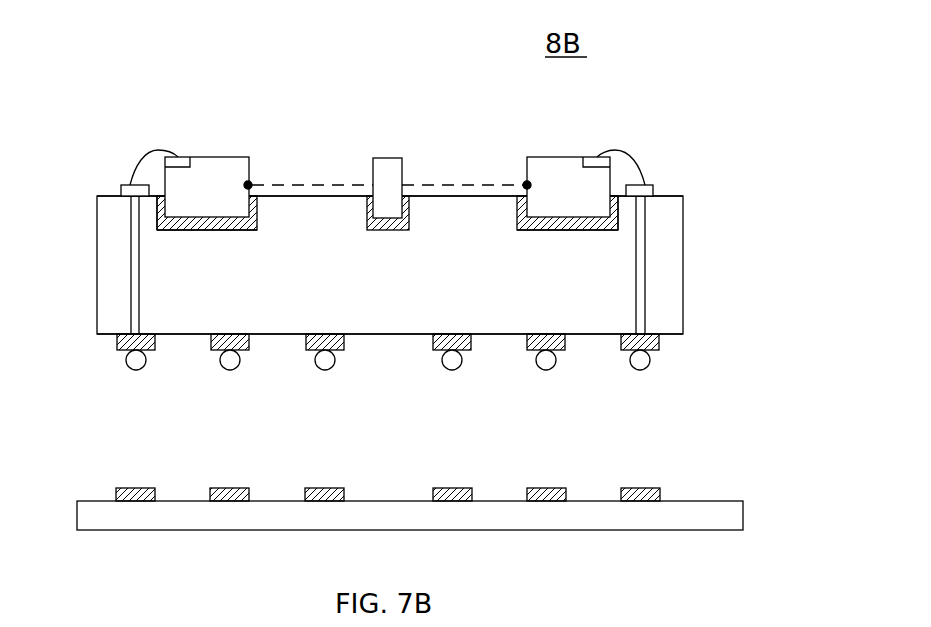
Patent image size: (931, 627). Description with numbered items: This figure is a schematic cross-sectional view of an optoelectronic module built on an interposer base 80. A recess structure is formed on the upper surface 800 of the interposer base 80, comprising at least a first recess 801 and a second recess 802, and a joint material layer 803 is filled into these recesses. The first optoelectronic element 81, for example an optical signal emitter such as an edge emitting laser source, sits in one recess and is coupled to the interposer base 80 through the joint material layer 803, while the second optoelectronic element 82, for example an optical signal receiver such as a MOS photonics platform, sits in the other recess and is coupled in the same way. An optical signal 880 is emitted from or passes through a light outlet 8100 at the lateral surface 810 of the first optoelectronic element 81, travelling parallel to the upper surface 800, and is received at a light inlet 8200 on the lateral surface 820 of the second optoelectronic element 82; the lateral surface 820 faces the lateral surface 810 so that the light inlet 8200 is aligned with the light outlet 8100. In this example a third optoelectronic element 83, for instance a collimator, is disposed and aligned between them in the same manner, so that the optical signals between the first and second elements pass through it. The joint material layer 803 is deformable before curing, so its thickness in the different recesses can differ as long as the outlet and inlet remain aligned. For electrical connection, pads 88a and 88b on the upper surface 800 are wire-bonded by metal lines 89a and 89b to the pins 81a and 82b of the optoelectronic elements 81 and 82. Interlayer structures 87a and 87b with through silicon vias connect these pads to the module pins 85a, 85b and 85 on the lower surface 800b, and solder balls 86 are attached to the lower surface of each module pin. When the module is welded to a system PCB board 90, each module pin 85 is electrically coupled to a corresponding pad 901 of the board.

The interposer base 80 is at (660, 305).
The upper surface 800 is at (655, 197).
The lower surface 800b is at (400, 334).
The first recess 801 is at (158, 210).
The second recess 802 is at (617, 207).
The joint material layer 803 is at (553, 230).
The first optoelectronic element 81 is at (207, 187).
The pin of first optoelectronic element 81a is at (187, 157).
The lateral surface of first optoelectronic element 810 is at (249, 157).
The light outlet 8100 is at (250, 183).
The second optoelectronic element 82 is at (568, 187).
The pin of second optoelectronic element 82b is at (590, 157).
The lateral surface of second optoelectronic element 820 is at (514, 194).
The light inlet 8200 is at (525, 183).
The third optoelectronic element 83 is at (388, 158).
The optical signal 880 is at (455, 185).
The module pins 85 is at (241, 341).
The module pin 85a is at (147, 341).
The module pin 85b is at (651, 341).
The solder balls 86 is at (139, 358).
The interlayer structure 87a is at (135, 288).
The interlayer structure 87b is at (640, 268).
The pad 88a is at (130, 185).
The pad 88b is at (641, 186).
The metal line 89a is at (142, 157).
The metal line 89b is at (630, 155).
The system PCB board 90 is at (729, 512).
The pad of system PCB board 901 is at (141, 488).